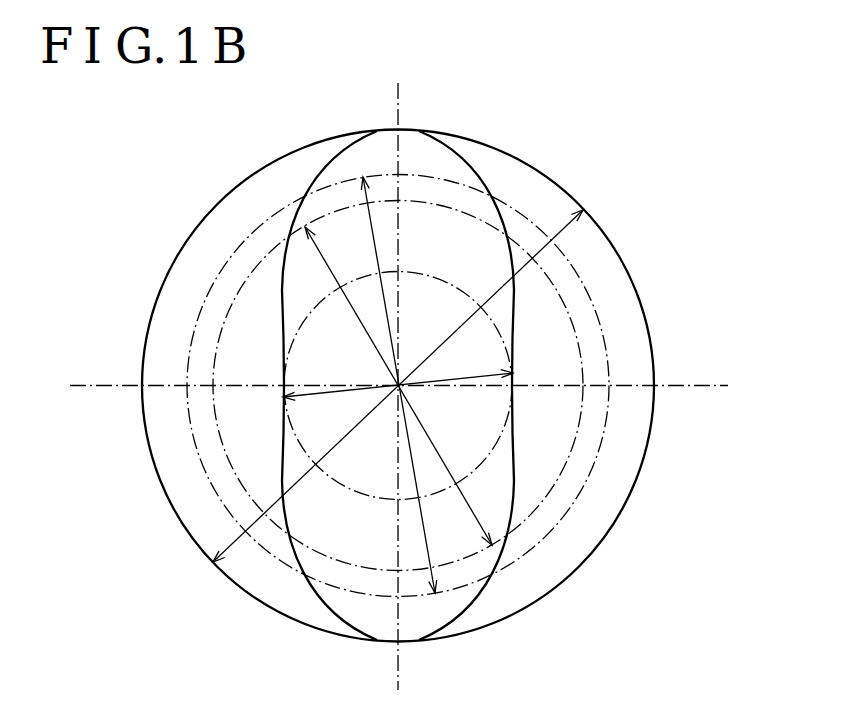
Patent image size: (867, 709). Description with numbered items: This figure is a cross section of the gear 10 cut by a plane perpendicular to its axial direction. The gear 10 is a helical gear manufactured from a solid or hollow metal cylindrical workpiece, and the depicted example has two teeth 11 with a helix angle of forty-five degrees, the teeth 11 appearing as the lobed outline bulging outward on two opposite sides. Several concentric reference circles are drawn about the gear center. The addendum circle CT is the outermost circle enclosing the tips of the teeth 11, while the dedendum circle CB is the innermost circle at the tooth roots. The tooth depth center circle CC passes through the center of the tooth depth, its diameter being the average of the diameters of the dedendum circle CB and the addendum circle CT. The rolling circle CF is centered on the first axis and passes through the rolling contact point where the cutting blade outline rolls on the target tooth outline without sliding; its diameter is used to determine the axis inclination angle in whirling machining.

The gear 10 is at (172, 307).
The teeth 11 is at (462, 156).
The addendum circle CT is at (607, 232).
The dedendum circle CB is at (515, 313).
The tooth depth center circle CC is at (537, 512).
The rolling circle CF is at (530, 555).